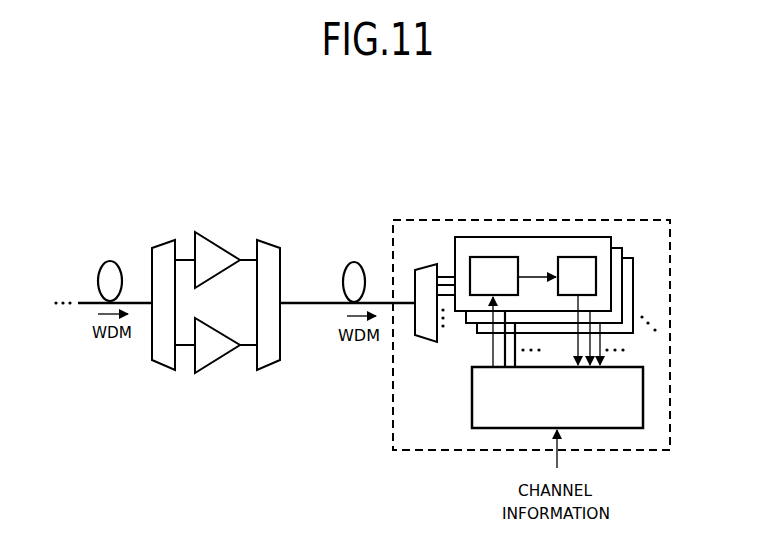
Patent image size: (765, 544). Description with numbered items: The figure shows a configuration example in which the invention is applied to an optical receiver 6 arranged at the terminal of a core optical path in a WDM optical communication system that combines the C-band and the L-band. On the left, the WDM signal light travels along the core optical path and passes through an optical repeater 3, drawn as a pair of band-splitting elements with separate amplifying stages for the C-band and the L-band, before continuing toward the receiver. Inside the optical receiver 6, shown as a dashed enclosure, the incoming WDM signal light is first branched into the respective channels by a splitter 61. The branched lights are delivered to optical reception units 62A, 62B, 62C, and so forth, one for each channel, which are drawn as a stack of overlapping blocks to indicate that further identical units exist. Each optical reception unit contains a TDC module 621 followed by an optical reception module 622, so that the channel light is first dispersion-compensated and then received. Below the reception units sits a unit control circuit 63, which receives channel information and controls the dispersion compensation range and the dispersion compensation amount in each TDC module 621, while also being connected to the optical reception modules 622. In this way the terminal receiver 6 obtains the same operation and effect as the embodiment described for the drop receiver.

The optical repeater 3 is at (195, 207).
The optical receiver 6 is at (393, 422).
The splitter 61 is at (423, 265).
The optical reception unit 62A is at (597, 236).
The optical reception unit 62B is at (615, 246).
The optical reception unit 62C is at (627, 256).
The TDC module 621 is at (493, 256).
The optical reception module 622 is at (573, 256).
The unit control circuit 63 is at (643, 395).